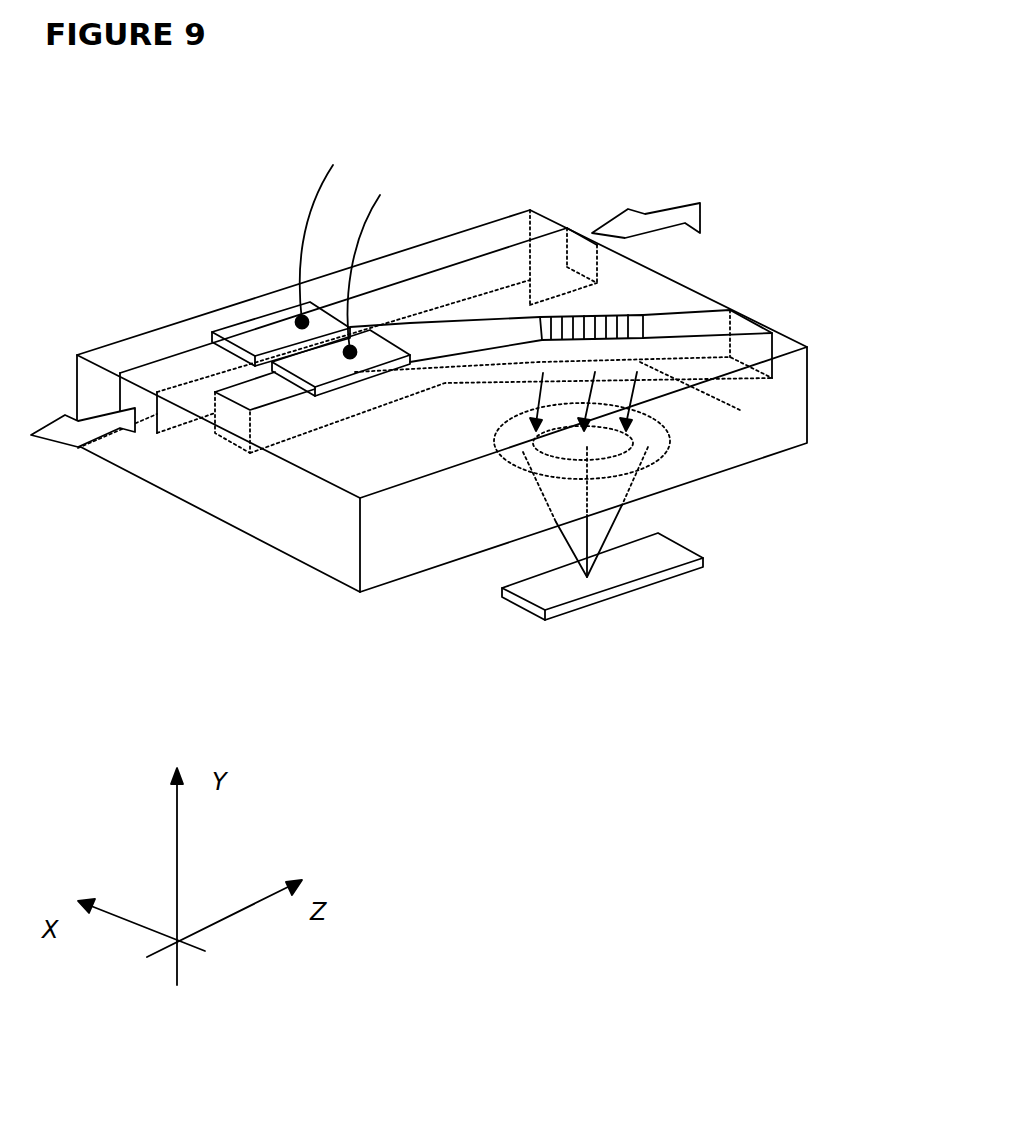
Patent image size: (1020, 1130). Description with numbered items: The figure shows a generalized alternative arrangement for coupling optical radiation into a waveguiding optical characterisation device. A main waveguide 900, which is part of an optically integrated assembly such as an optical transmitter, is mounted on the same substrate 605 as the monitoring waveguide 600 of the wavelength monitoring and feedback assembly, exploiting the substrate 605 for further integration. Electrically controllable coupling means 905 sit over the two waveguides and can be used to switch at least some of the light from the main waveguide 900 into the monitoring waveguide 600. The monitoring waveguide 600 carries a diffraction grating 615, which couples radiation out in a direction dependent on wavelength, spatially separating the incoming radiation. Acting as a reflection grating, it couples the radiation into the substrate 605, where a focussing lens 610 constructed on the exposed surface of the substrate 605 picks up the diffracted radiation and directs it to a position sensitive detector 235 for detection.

The waveguide 900 is at (168, 357).
The electrically controllable coupling means 905 is at (295, 348).
The waveguide 600 is at (232, 418).
The substrate 605 is at (295, 560).
The focussing lens 610 is at (670, 441).
The diffraction grating 615 is at (597, 313).
The position sensitive detector 235 is at (640, 577).